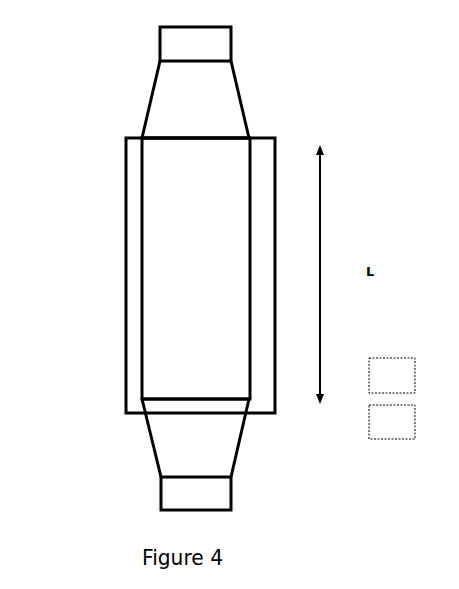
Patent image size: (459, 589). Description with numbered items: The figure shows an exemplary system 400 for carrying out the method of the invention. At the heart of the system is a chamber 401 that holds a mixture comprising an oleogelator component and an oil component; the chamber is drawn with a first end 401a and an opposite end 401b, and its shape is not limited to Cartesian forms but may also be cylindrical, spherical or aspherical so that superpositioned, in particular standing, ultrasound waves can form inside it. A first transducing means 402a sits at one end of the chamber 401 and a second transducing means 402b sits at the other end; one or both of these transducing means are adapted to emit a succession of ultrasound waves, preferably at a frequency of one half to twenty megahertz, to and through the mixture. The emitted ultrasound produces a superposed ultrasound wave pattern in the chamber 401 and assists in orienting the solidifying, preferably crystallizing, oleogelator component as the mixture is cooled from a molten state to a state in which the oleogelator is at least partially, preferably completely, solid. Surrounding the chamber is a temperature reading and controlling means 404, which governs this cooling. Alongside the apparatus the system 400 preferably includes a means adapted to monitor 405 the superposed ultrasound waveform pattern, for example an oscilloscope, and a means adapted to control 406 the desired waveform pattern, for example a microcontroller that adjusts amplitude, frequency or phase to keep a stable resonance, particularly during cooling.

The system 400 is at (53, 118).
The chamber 401 is at (183, 200).
The downstream end of catalyst body 401a is at (196, 385).
The upstream end of catalyst body 401b is at (196, 152).
The first transducing means 402a is at (168, 438).
The second transducing means 402b is at (198, 101).
The temperature reading and controlling means 404 is at (133, 274).
The means adapted to monitor 405 is at (392, 375).
The means adapted to control 406 is at (392, 422).